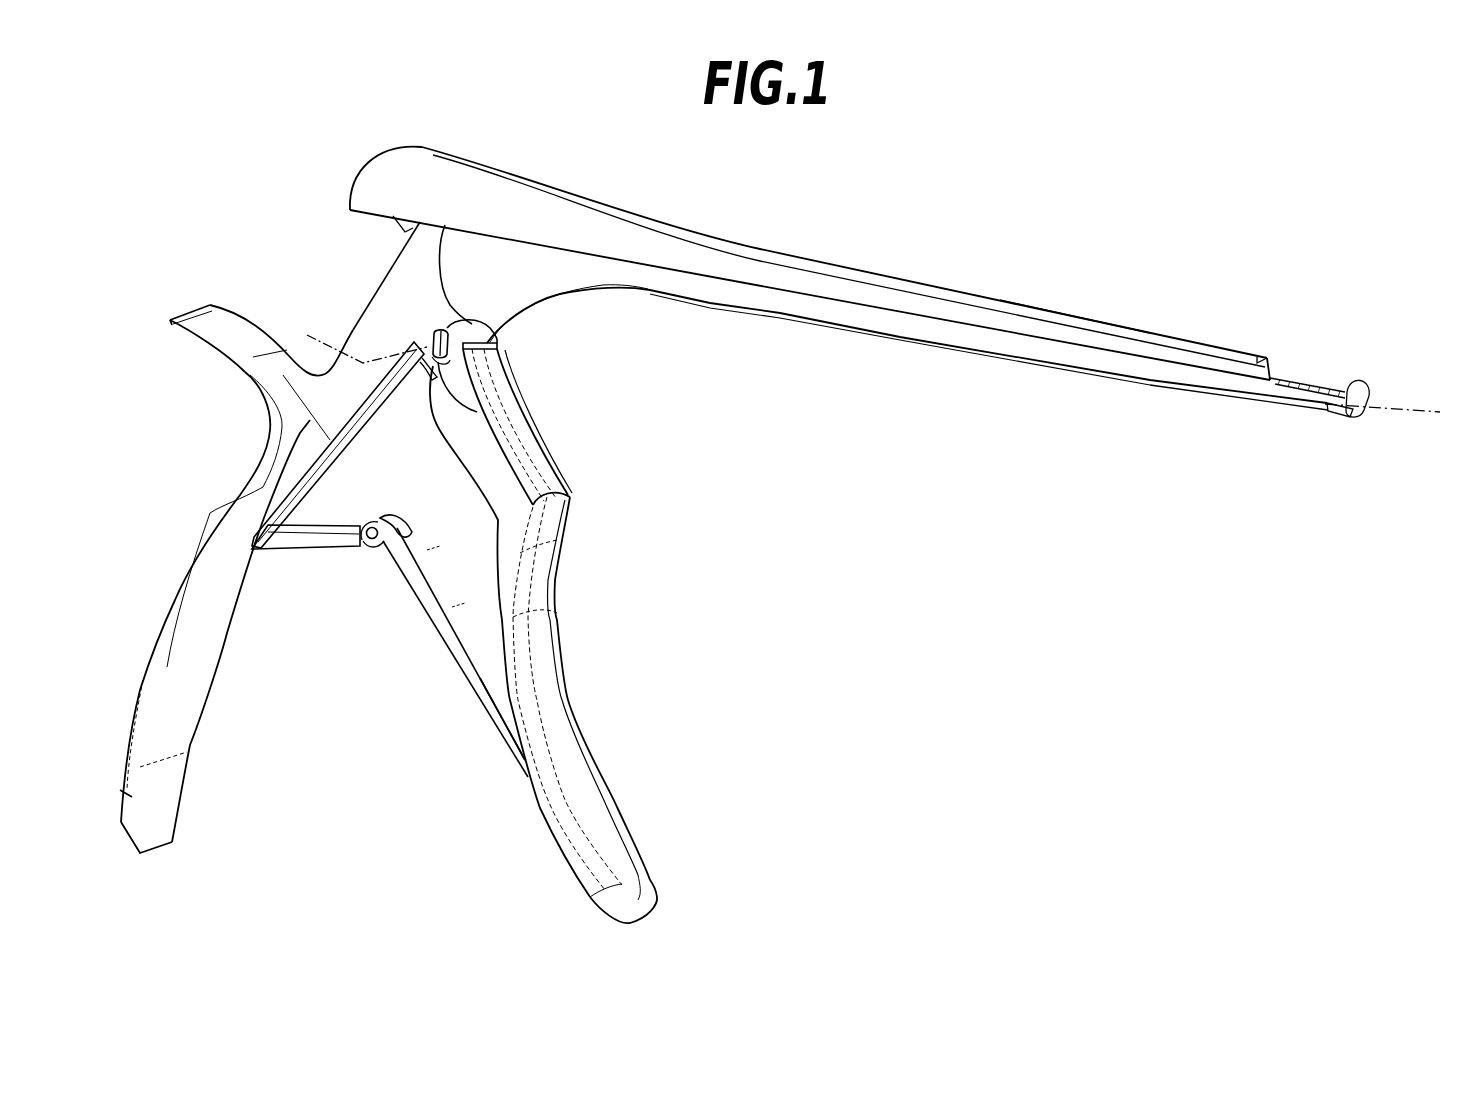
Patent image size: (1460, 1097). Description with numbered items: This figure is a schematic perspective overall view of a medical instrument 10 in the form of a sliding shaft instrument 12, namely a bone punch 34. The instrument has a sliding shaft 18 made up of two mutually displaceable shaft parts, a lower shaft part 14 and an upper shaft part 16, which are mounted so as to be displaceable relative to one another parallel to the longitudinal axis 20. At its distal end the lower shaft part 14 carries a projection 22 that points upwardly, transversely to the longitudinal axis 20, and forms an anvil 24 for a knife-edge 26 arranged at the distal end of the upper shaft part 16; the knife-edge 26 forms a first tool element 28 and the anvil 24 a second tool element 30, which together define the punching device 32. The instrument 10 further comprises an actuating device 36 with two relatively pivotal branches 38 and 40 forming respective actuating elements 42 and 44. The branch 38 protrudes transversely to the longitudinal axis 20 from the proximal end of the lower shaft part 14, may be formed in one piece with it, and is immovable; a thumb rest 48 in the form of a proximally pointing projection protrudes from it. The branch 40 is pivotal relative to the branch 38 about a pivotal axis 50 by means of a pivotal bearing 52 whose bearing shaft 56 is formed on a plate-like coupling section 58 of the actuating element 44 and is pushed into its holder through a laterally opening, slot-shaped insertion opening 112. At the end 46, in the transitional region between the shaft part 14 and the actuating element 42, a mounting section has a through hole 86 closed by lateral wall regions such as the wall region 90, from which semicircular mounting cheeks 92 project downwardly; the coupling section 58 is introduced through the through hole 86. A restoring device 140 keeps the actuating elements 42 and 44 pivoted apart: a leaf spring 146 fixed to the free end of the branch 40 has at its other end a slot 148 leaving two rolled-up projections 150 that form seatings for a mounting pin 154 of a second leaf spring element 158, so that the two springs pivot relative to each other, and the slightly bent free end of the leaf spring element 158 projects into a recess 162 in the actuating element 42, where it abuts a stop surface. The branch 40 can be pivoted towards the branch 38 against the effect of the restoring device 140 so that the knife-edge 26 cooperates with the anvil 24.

The medical instrument 10 is at (950, 220).
The shaft assembly 12 is at (1016, 230).
The lower shaft part 14 is at (907, 360).
The upper shaft part 16 is at (786, 240).
The sliding shaft 18 is at (887, 342).
The longitudinal axis 20 is at (1407, 393).
The projection 22 is at (1342, 414).
The anvil 24 is at (1350, 402).
The knife-edge 26 is at (1293, 370).
The first tool element 28 is at (1313, 382).
The second tool element 30 is at (1345, 387).
The punching device 32 is at (1296, 407).
The bone punch 34 is at (1124, 298).
The actuating device 36 is at (347, 875).
The branch 38 is at (212, 612).
The branch 40 is at (609, 727).
The actuating element 42 is at (172, 558).
The actuating element 44 is at (591, 669).
The end 46 is at (445, 225).
The thumb rest 48 is at (258, 325).
The pivotal axis 50 is at (355, 331).
The pivotal bearing 52 is at (420, 325).
The bearing shaft 56 is at (497, 343).
The coupling section 58 is at (395, 228).
The through hole 86 is at (410, 375).
The lateral wall region 90 is at (430, 275).
The mounting cheek 92 is at (448, 363).
The insertion opening 112 is at (455, 390).
The restoring device 140 is at (432, 652).
The leaf spring 146 is at (483, 685).
The slot 148 is at (400, 518).
The protruding projections 150 is at (372, 523).
The mounting pin 154 is at (370, 542).
The leaf spring element 158 is at (298, 548).
The recess 162 is at (308, 486).